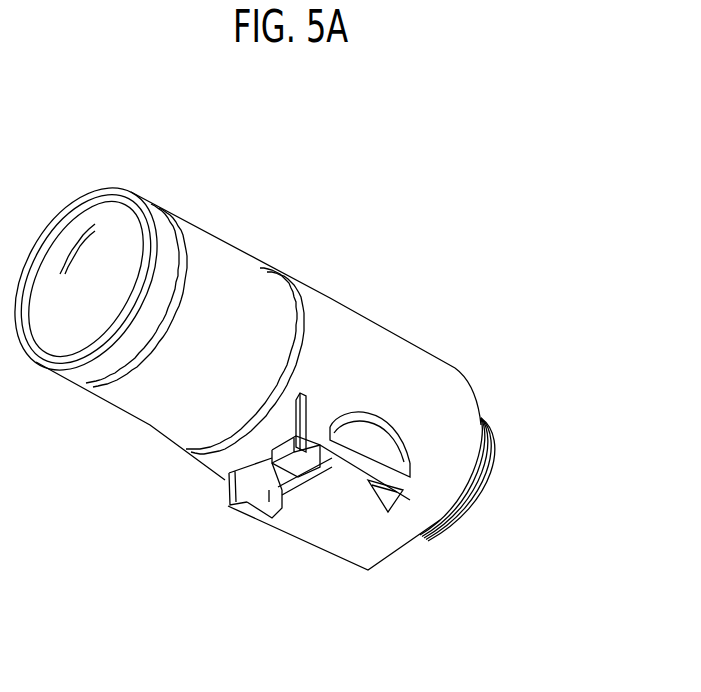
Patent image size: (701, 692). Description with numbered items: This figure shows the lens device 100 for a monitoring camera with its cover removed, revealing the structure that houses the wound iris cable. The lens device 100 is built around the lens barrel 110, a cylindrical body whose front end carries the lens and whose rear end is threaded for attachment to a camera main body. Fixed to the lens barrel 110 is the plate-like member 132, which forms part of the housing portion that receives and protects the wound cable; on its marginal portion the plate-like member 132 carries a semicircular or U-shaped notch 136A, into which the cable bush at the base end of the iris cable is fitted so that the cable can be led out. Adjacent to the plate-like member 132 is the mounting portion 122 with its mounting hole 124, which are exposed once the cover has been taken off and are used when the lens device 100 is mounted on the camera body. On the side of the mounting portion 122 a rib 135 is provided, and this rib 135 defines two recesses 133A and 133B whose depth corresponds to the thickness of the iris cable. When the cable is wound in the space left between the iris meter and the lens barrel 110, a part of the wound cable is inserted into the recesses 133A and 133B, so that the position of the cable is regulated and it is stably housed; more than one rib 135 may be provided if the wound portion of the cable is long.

The lens device 100 is at (253, 361).
The lens barrel 110 is at (335, 285).
The mounting portion 122 is at (315, 523).
The mounting hole 124 is at (283, 488).
The plate-like member 132 is at (230, 483).
The recess 133A is at (368, 485).
The recess 133B is at (388, 440).
The rib 135 is at (390, 484).
The notch 136A is at (292, 420).